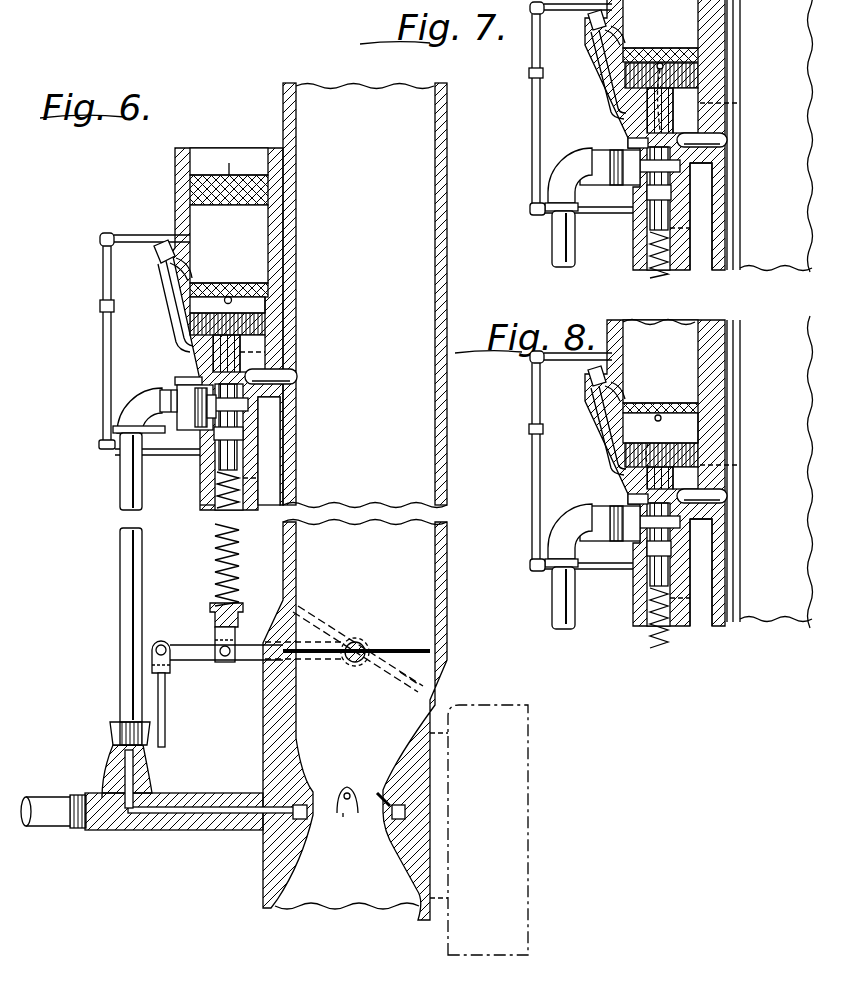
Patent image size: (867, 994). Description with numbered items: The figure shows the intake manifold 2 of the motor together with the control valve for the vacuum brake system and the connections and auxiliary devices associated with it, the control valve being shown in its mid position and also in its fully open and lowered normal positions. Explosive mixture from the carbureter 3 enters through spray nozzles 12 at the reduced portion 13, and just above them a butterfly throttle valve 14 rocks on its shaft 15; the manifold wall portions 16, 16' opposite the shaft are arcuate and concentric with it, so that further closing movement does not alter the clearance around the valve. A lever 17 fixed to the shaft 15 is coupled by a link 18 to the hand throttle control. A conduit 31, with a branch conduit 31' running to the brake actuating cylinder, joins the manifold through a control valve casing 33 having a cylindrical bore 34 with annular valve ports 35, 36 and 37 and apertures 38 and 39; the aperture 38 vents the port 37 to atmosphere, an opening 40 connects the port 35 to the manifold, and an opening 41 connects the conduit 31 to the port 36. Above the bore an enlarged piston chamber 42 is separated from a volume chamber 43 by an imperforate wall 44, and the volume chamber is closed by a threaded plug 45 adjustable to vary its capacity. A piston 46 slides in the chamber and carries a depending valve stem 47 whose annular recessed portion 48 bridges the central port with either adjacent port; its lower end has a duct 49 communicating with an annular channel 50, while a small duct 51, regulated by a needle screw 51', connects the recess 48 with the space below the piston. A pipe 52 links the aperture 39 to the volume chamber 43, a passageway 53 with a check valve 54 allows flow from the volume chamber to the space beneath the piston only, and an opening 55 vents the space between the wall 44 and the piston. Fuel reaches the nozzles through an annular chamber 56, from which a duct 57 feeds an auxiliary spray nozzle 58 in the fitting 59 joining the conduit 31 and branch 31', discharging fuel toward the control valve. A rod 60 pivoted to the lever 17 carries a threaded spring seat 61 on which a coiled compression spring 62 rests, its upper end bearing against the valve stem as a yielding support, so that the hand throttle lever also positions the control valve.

In FIG. 6, the intake manifold 2 is at (450, 299).
In FIG. 6, the carbureter 3 is at (494, 714).
In FIG. 6, the spray nozzles 12 is at (382, 795).
In FIG. 6, the reduced portion 13 is at (343, 815).
In FIG. 6, the throttle valve 14 is at (395, 650).
In FIG. 6, the rock shaft 15 is at (350, 640).
In FIG. 6, the arcuate wall portion 16 is at (353, 639).
In FIG. 6, the arcuate wall portion 16' is at (398, 683).
In FIG. 6, the lever 17 is at (256, 656).
In FIG. 6, the link 18 is at (163, 697).
In FIG. 6, the conduit 31 is at (108, 589).
In FIG. 7, the conduit 31 is at (582, 239).
In FIG. 8, the conduit 31 is at (582, 598).
In FIG. 6, the branch conduit 31' is at (53, 790).
In FIG. 6, the control valve casing 33 is at (195, 430).
In FIG. 6, the cylindrical bore 34 is at (198, 388).
In FIG. 6, the upper annular valve port 35 is at (198, 380).
In FIG. 7, the upper annular valve port 35 is at (632, 143).
In FIG. 8, the upper annular valve port 35 is at (606, 491).
In FIG. 6, the intermediate annular valve port 36 is at (249, 404).
In FIG. 7, the intermediate annular valve port 36 is at (693, 168).
In FIG. 8, the intermediate annular valve port 36 is at (631, 537).
In FIG. 6, the lower annular valve port 37 is at (208, 438).
In FIG. 7, the lower annular valve port 37 is at (647, 183).
In FIG. 8, the lower annular valve port 37 is at (620, 554).
In FIG. 6, the aperture 38 is at (258, 441).
In FIG. 7, the aperture 38 is at (690, 203).
In FIG. 8, the aperture 38 is at (714, 554).
In FIG. 6, the aperture 39 is at (212, 508).
In FIG. 7, the aperture 39 is at (633, 231).
In FIG. 8, the aperture 39 is at (593, 611).
In FIG. 6, the opening 40 is at (297, 372).
In FIG. 7, the opening 40 is at (728, 140).
In FIG. 8, the opening 40 is at (721, 487).
In FIG. 6, the opening 41 is at (194, 426).
In FIG. 7, the opening 41 is at (600, 149).
In FIG. 8, the opening 41 is at (589, 528).
In FIG. 6, the piston chamber 42 is at (268, 325).
In FIG. 7, the piston chamber 42 is at (700, 110).
In FIG. 8, the piston chamber 42 is at (731, 445).
In FIG. 6, the volume chamber 43 is at (229, 244).
In FIG. 7, the volume chamber 43 is at (660, 24).
In FIG. 8, the volume chamber 43 is at (660, 362).
In FIG. 6, the imperforate wall 44 is at (249, 283).
In FIG. 7, the imperforate wall 44 is at (640, 23).
In FIG. 8, the imperforate wall 44 is at (660, 396).
In FIG. 6, the threaded plug 45 is at (261, 175).
In FIG. 6, the piston 46 is at (265, 330).
In FIG. 7, the piston 46 is at (700, 88).
In FIG. 8, the piston 46 is at (703, 444).
In FIG. 6, the valve stem 47 is at (245, 355).
In FIG. 7, the valve stem 47 is at (685, 130).
In FIG. 8, the valve stem 47 is at (726, 488).
In FIG. 6, the annular recessed portion 48 is at (260, 402).
In FIG. 7, the annular recessed portion 48 is at (695, 170).
In FIG. 8, the annular recessed portion 48 is at (715, 564).
In FIG. 6, the duct 49 is at (258, 478).
In FIG. 7, the duct 49 is at (690, 226).
In FIG. 8, the duct 49 is at (732, 603).
In FIG. 6, the annular channel 50 is at (262, 475).
In FIG. 7, the annular channel 50 is at (692, 215).
In FIG. 8, the annular channel 50 is at (734, 572).
In FIG. 6, the duct 51 is at (308, 343).
In FIG. 7, the duct 51 is at (755, 100).
In FIG. 8, the duct 51 is at (742, 462).
In FIG. 6, the screw 51' is at (227, 313).
In FIG. 7, the screw 51' is at (642, 76).
In FIG. 8, the screw 51' is at (660, 442).
In FIG. 6, the pipe 52 is at (102, 280).
In FIG. 7, the pipe 52 is at (532, 61).
In FIG. 8, the pipe 52 is at (550, 461).
In FIG. 6, the passageway 53 is at (148, 290).
In FIG. 7, the passageway 53 is at (597, 62).
In FIG. 8, the passageway 53 is at (588, 430).
In FIG. 6, the check valve 54 is at (176, 269).
In FIG. 7, the check valve 54 is at (590, 23).
In FIG. 8, the check valve 54 is at (622, 366).
In FIG. 6, the opening 55 is at (266, 300).
In FIG. 7, the opening 55 is at (665, 66).
In FIG. 8, the opening 55 is at (720, 422).
In FIG. 6, the annular chamber 56 is at (406, 812).
In FIG. 6, the duct 57 is at (206, 830).
In FIG. 6, the auxiliary spray nozzle 58 is at (136, 786).
In FIG. 6, the fitting 59 is at (110, 768).
In FIG. 6, the rod 60 is at (213, 635).
In FIG. 6, the spring seat 61 is at (238, 615).
In FIG. 6, the coiled compression spring 62 is at (233, 542).
In FIG. 7, the coiled compression spring 62 is at (650, 276).
In FIG. 8, the coiled compression spring 62 is at (691, 623).